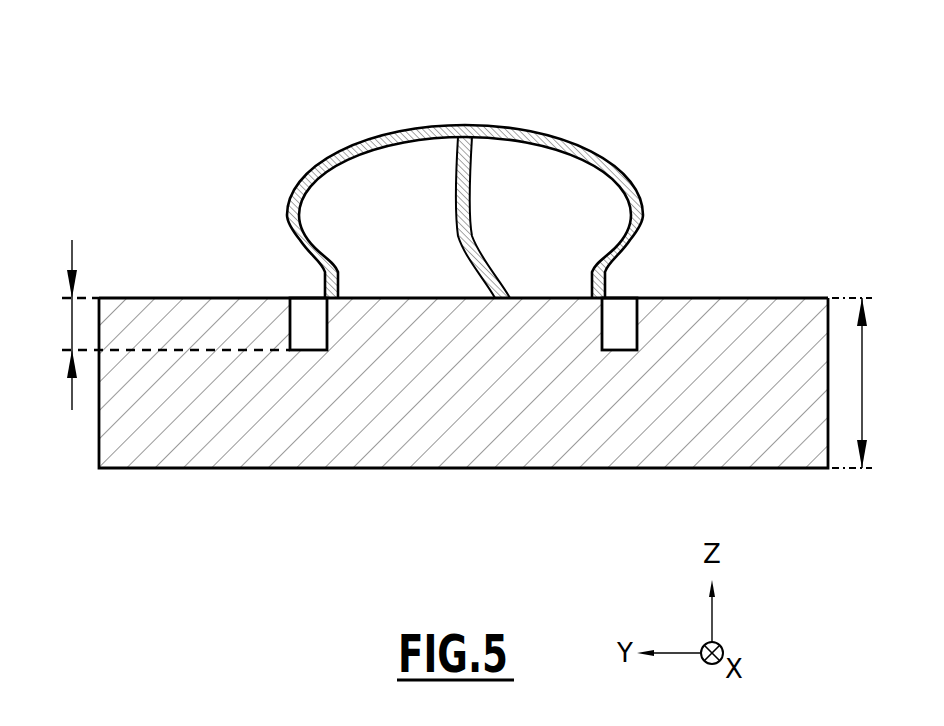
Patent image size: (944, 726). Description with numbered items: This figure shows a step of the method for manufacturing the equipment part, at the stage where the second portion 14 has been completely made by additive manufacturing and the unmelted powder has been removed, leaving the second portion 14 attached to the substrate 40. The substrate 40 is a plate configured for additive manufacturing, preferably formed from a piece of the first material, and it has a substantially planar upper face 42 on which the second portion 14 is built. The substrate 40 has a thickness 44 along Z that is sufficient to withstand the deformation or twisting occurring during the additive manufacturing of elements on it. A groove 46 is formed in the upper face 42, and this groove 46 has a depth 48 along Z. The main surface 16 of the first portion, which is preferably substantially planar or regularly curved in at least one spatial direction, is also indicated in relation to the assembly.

The second portion 14 is at (338, 100).
The main surface 16 is at (400, 297).
The substrate 40 is at (230, 517).
The upper face 42 is at (797, 298).
The thickness 44 is at (865, 383).
The groove 46 is at (630, 310).
The depth 48 is at (156, 325).